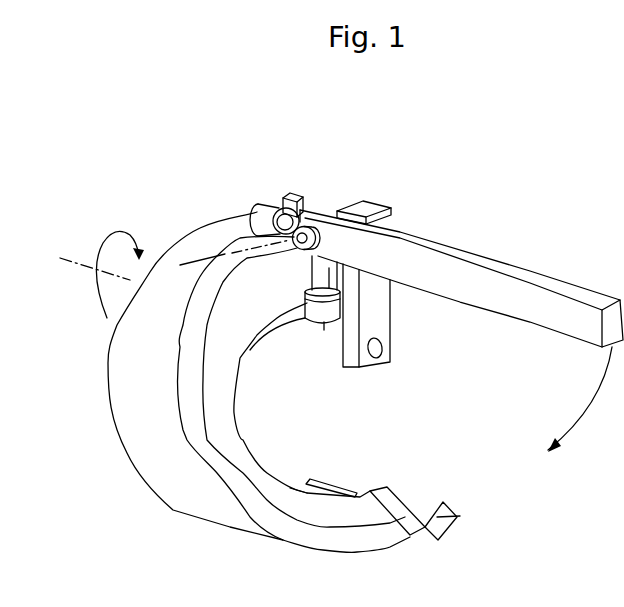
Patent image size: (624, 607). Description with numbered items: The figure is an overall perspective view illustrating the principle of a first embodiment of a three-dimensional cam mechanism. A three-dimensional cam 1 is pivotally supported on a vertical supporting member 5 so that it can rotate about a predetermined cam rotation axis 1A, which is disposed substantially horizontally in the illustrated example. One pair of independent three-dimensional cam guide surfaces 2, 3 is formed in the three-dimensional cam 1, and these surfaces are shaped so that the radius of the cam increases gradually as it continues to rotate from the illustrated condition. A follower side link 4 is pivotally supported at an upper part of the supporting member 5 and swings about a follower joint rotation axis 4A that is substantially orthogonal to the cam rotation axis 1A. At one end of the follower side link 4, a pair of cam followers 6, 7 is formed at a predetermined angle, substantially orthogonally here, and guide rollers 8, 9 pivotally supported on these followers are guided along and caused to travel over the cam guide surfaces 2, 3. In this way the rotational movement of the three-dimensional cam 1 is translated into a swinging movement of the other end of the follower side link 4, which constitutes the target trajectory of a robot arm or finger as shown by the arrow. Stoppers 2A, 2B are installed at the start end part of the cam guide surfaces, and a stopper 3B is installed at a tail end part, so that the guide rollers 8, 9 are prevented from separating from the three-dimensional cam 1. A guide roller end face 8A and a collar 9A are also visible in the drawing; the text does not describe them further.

The three-dimensional cam 1 is at (130, 382).
The cam rotation axis 1A is at (388, 350).
The cam guide surface 2 is at (190, 413).
The stopper 2A is at (296, 196).
The stopper 2B is at (460, 516).
The cam guide surface 3 is at (283, 320).
The stopper 3B is at (327, 486).
The follower side link 4 is at (478, 287).
The follower joint rotation axis 4A is at (395, 215).
The supporting member 5 is at (376, 313).
The cam follower 6 is at (272, 195).
The cam follower 7 is at (332, 333).
The guide roller 8 is at (262, 205).
The end face 8A is at (258, 208).
The guide roller 9 is at (312, 304).
The collar 9A is at (320, 328).